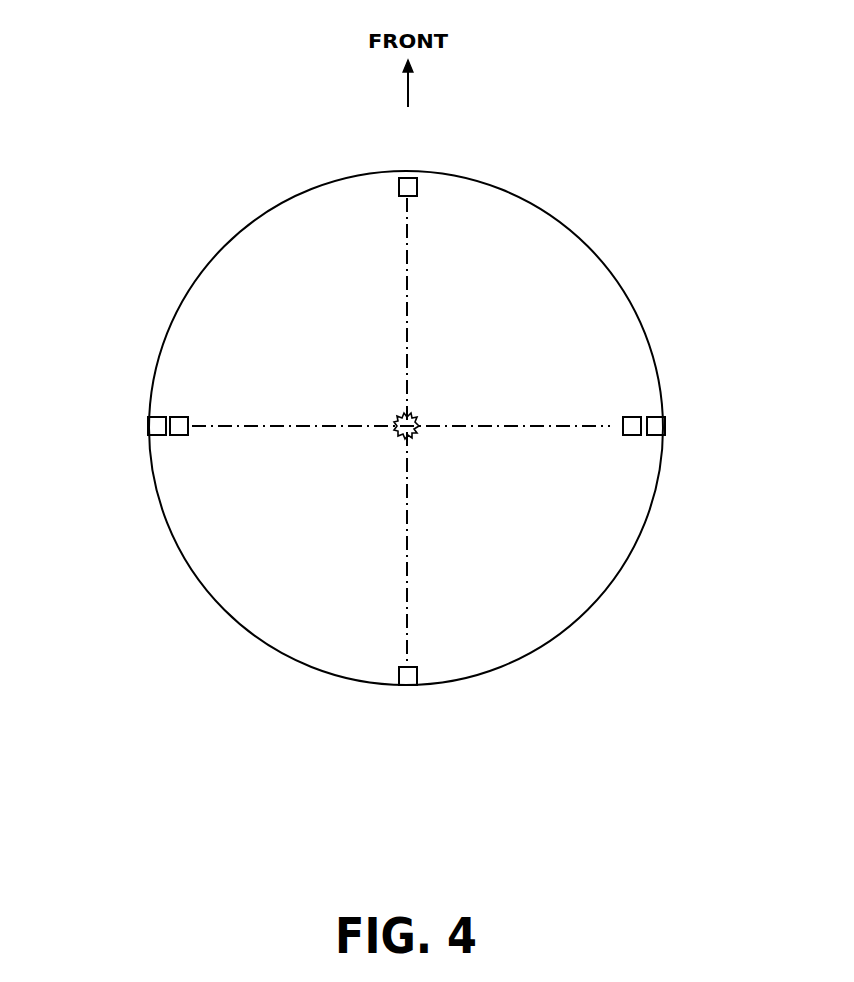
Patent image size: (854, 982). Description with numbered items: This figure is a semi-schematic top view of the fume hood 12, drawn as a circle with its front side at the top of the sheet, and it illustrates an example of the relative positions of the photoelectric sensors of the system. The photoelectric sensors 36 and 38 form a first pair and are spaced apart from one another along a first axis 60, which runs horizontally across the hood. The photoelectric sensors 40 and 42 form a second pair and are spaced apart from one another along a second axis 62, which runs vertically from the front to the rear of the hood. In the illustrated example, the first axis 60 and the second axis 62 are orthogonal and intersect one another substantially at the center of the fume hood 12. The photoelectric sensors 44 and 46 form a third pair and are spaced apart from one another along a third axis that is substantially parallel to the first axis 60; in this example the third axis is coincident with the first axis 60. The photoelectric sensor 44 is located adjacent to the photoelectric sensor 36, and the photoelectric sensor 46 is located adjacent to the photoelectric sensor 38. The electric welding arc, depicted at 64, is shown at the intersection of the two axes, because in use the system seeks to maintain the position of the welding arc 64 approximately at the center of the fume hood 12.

The fume hood 12 is at (538, 207).
The photoelectric sensor 36 is at (148, 418).
The photoelectric sensor 38 is at (665, 420).
The photoelectric sensor 40 is at (400, 177).
The photoelectric sensor 42 is at (407, 687).
The photoelectric sensor 44 is at (186, 417).
The photoelectric sensor 46 is at (633, 417).
The first axis 60 is at (294, 426).
The second axis 62 is at (408, 527).
The electric welding arc 64 is at (417, 420).